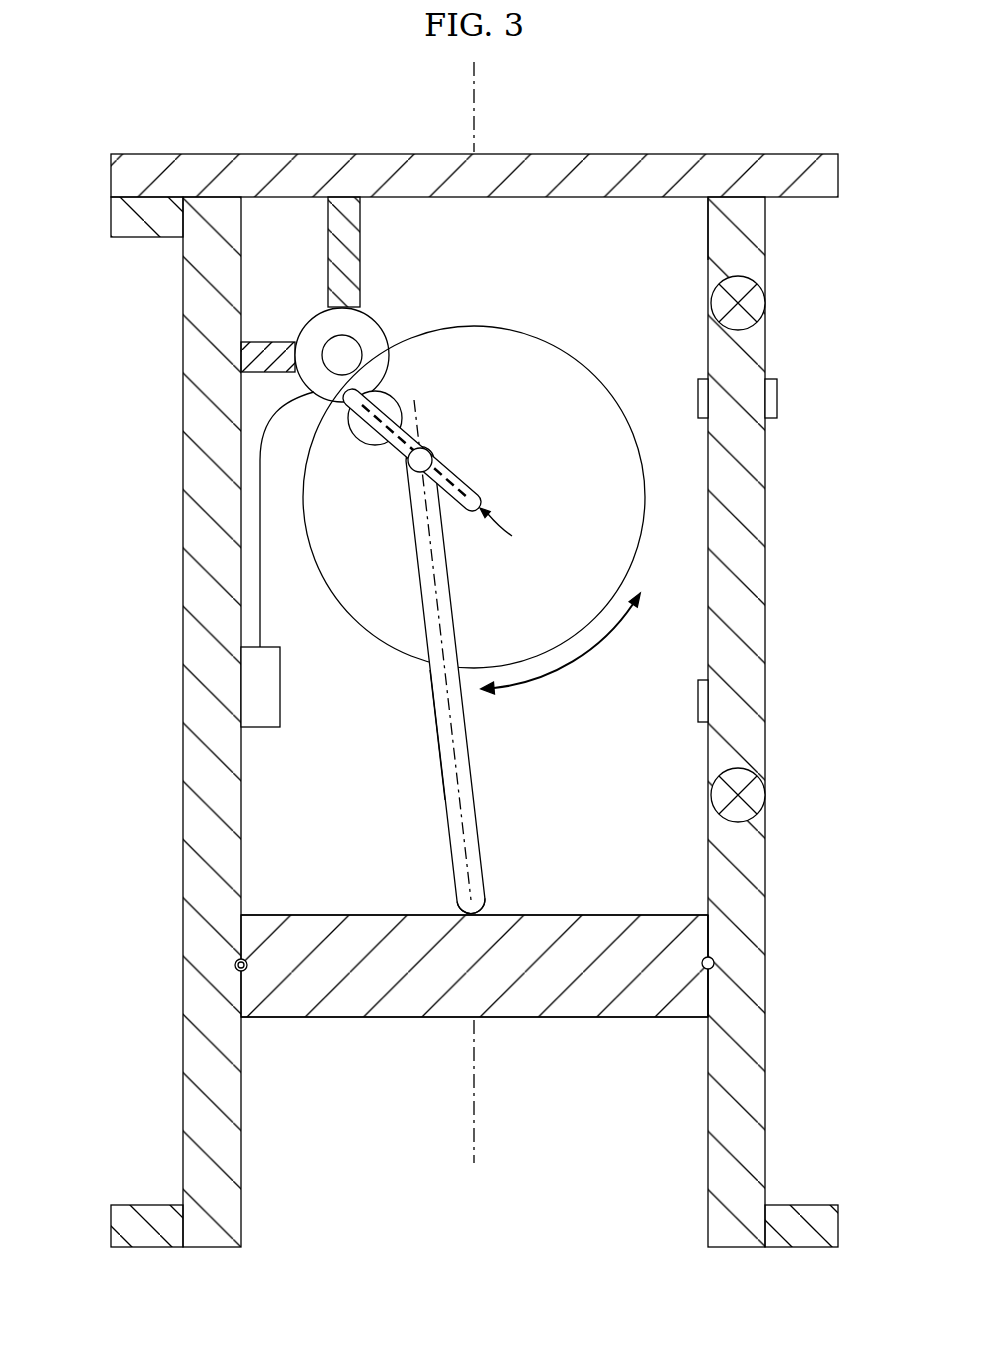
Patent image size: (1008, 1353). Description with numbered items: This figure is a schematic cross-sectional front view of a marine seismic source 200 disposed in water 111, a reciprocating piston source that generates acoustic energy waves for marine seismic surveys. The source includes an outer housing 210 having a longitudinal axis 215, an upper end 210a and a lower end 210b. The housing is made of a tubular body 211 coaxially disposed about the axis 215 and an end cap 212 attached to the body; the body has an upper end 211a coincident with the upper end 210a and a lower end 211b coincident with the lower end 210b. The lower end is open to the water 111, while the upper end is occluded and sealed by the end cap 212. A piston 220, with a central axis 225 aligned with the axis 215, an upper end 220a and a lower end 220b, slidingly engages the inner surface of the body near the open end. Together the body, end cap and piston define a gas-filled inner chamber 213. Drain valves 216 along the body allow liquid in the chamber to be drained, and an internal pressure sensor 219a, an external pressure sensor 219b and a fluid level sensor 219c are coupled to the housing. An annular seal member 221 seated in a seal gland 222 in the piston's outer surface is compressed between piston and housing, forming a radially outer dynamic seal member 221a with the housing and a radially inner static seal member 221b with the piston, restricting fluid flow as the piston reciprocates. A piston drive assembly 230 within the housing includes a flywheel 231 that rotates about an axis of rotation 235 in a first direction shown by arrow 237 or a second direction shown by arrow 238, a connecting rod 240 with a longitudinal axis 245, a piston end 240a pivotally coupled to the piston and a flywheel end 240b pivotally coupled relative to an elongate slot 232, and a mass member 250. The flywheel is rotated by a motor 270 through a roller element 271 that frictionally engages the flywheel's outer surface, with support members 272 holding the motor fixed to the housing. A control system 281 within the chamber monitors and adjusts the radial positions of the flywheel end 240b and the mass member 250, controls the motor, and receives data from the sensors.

The marine seismic source 200 is at (624, 70).
The water 111 is at (832, 629).
The outer housing 210 is at (176, 514).
The upper end of housing 210a is at (260, 153).
The lower end of housing 210b is at (210, 1248).
The tubular body 211 is at (776, 510).
The upper end of body 211a is at (707, 234).
The lower end of body 211b is at (750, 1248).
The end cap 212 is at (672, 153).
The inner chamber 213 is at (592, 302).
The longitudinal axis of housing 215 is at (472, 104).
The drain valves 216 is at (760, 303).
The internal pressure sensor 219a is at (697, 392).
The external pressure sensor 219b is at (778, 396).
The fluid level sensor 219c is at (697, 712).
The piston 220 is at (585, 1028).
The upper end of piston 220a is at (380, 913).
The lower end of piston 220b is at (348, 1019).
The annular seal member 221 is at (716, 966).
The radially outer dynamic seal member 221a is at (238, 966).
The radially inner static seal member 221b is at (250, 965).
The seal gland 222 is at (702, 963).
The central axis of piston 225 is at (472, 1118).
The piston drive assembly 230 is at (479, 558).
The flywheel 231 is at (494, 326).
The elongate slot 232 is at (460, 484).
The axis of rotation 235 is at (515, 535).
The first direction arrow 237 is at (548, 682).
The second direction arrow 238 is at (600, 640).
The connecting rod 240 is at (466, 780).
The piston end of connecting rod 240a is at (484, 905).
The flywheel end of connecting rod 240b is at (430, 452).
The longitudinal axis of connecting rod 245 is at (439, 778).
The mass member 250 is at (365, 446).
The motor 270 is at (368, 316).
The roller element 271 is at (318, 330).
The support members 272 is at (328, 247).
The control system 281 is at (282, 688).